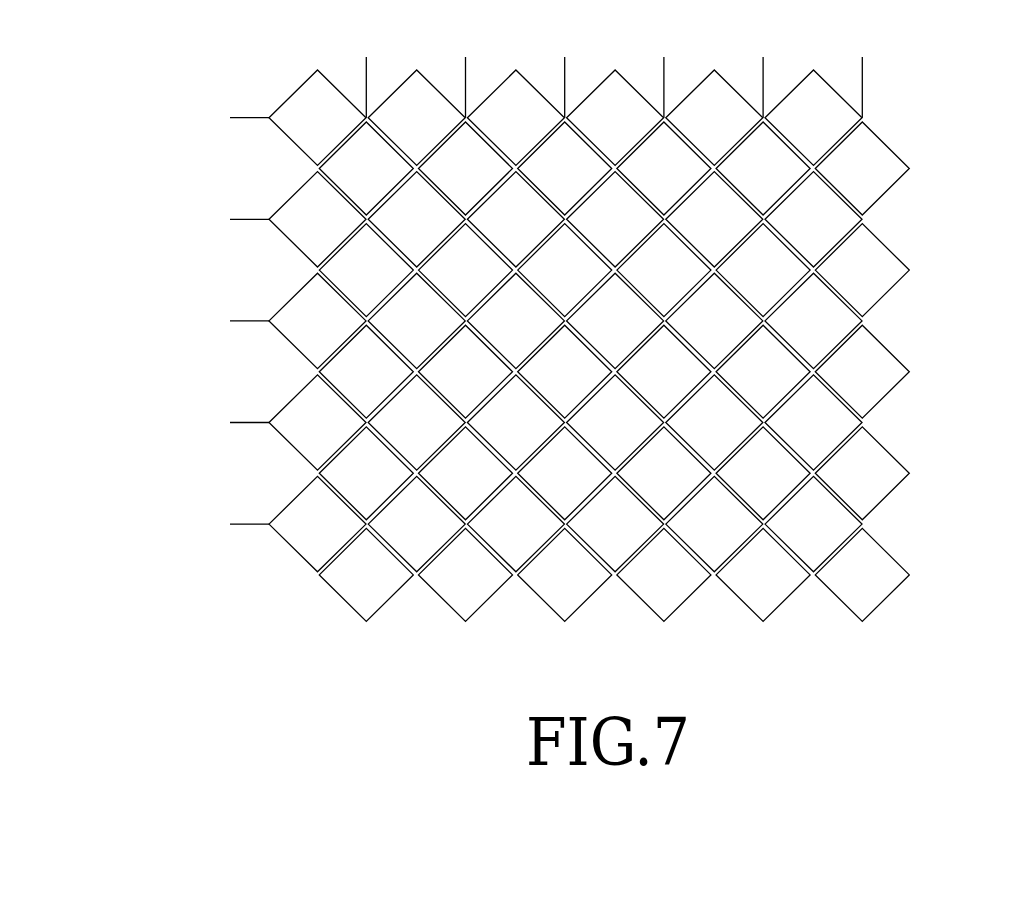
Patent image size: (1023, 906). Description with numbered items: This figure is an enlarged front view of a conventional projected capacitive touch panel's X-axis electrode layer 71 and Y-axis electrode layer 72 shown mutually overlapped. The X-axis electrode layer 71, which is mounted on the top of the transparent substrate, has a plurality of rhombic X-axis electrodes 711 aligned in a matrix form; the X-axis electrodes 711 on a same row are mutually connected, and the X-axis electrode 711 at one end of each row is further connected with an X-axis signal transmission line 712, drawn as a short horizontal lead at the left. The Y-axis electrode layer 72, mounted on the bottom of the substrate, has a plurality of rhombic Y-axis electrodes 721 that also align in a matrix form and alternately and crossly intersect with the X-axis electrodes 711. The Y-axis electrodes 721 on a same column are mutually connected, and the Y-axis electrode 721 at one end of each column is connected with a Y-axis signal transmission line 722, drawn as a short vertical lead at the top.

The X-axis electrode layer 71 is at (501, 544).
The X-axis electrode 711 is at (303, 508).
The X-axis signal transmission line 712 is at (240, 524).
The Y-axis electrode layer 72 is at (910, 330).
The Y-axis electrode 721 is at (880, 183).
The Y-axis signal transmission line 722 is at (862, 83).